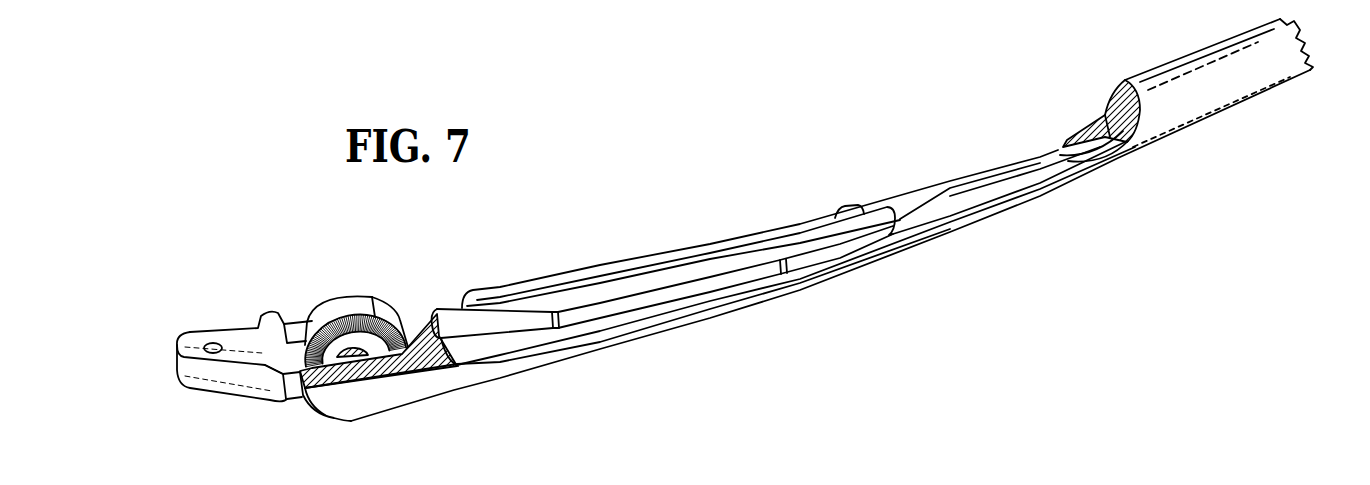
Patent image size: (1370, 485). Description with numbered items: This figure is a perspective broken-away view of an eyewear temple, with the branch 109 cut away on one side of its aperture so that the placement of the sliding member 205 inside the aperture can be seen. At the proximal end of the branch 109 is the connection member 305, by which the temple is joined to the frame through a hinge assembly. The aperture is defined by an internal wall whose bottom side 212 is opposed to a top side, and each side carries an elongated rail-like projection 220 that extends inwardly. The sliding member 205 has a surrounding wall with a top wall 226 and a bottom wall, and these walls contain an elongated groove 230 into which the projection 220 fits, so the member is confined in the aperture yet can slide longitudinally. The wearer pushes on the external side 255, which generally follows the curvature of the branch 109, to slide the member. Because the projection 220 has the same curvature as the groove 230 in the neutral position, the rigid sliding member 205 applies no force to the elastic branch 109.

The branch 109 is at (1235, 72).
The sliding member 205 is at (447, 310).
The bottom side 212 is at (1037, 187).
The projection 220 is at (963, 197).
The top wall 226 is at (527, 307).
The elongated groove 230 is at (798, 230).
The external side 255 is at (670, 297).
The connection member 305 is at (248, 345).